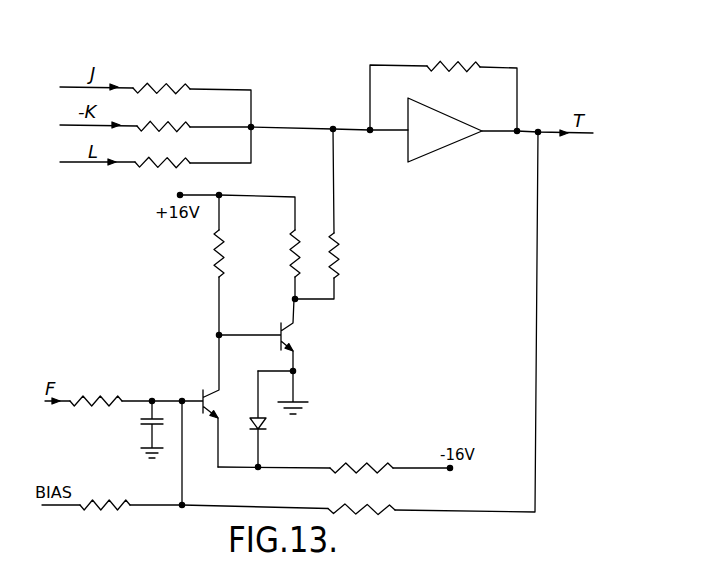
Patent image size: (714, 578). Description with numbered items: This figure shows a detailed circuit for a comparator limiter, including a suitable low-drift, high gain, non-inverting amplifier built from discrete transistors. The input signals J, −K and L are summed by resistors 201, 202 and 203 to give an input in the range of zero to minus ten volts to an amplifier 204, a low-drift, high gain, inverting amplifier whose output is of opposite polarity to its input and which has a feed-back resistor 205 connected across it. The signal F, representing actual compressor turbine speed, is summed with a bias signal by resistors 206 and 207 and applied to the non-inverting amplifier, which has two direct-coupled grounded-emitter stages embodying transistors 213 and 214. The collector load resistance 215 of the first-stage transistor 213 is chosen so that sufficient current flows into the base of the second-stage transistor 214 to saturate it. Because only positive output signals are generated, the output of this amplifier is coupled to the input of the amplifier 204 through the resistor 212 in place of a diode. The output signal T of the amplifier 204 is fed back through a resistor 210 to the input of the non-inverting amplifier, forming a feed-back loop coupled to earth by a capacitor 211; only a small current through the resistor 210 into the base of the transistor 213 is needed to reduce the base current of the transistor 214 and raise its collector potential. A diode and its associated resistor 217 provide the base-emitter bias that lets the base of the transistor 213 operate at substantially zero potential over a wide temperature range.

The resistor 201 is at (189, 86).
The resistor 202 is at (189, 124).
The resistor 203 is at (188, 161).
The amplifier 204 is at (437, 138).
The feed-back resistor 205 is at (462, 62).
The resistor 206 is at (113, 397).
The resistor 207 is at (108, 502).
The resistor 210 is at (266, 427).
The capacitor 211 is at (141, 421).
The resistor 212 is at (338, 253).
The transistor 213 is at (201, 389).
The transistor 214 is at (298, 337).
The collector load resistance 215 is at (213, 250).
The resistor 217 is at (373, 465).